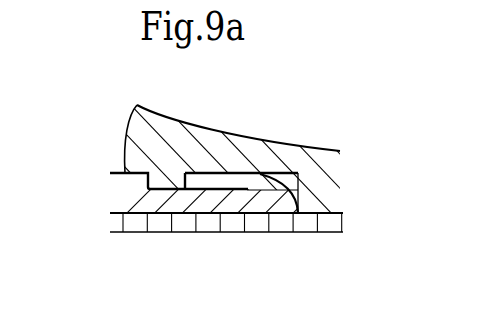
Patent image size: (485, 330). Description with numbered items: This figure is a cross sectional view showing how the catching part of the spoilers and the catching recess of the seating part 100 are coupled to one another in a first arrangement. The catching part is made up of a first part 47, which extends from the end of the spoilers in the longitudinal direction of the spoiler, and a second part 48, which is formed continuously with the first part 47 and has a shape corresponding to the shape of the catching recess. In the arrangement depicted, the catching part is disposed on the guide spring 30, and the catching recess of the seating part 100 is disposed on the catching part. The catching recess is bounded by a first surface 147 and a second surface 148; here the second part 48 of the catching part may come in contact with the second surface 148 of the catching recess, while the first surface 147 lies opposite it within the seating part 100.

The seating part 100 is at (138, 131).
The first surface 147 is at (222, 133).
The second surface 148 is at (298, 173).
The guide spring 30 is at (152, 222).
The first part 47 is at (234, 214).
The second part 48 is at (273, 205).